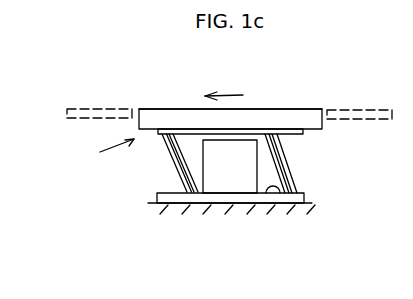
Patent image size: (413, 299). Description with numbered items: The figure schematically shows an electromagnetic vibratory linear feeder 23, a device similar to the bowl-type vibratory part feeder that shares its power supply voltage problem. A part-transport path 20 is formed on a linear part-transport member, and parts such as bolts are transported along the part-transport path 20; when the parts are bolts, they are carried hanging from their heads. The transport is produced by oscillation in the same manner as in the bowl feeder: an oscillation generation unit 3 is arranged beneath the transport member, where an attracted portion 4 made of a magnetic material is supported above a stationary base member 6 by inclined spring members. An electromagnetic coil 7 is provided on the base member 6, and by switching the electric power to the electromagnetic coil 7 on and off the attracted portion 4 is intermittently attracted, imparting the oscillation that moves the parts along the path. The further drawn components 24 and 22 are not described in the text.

The stage 20 is at (302, 109).
The top plate 24 is at (267, 117).
The adjacent stage position 22 is at (88, 120).
The moving direction 23 is at (103, 154).
The left leg 4 is at (193, 137).
The right leg 3 is at (296, 163).
The drive unit 7 is at (230, 173).
The pivot 6 is at (275, 190).